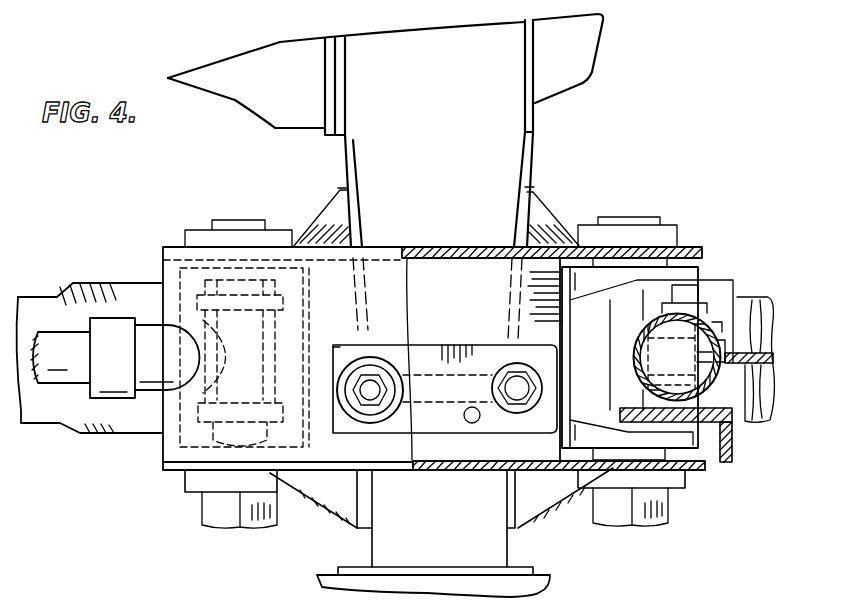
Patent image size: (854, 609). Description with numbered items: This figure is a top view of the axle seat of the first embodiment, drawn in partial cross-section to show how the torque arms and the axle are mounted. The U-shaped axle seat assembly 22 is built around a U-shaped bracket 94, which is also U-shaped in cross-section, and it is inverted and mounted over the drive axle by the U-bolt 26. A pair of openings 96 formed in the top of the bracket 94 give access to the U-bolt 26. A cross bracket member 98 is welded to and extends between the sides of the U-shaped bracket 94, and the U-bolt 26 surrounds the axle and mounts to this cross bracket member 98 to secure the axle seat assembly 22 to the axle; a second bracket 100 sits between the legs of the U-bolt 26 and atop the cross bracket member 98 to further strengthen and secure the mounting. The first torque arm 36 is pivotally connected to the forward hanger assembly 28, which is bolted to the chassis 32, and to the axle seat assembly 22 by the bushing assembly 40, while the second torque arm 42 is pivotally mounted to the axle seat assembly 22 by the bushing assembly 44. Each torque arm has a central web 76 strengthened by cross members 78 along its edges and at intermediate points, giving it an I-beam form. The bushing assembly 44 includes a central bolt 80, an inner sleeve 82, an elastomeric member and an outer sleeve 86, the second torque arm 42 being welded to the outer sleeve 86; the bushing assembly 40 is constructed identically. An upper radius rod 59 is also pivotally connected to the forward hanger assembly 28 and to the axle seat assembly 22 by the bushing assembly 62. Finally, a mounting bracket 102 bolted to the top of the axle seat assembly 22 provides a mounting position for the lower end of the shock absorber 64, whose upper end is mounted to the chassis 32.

The axle seat assembly 22 is at (697, 242).
The U-bolt 26 is at (383, 365).
The forward hanger assembly 28 is at (383, 538).
The chassis 32 is at (610, 608).
The first torque arm 36 is at (99, 275).
The bushing assembly 40 is at (206, 530).
The second torque arm 42 is at (744, 440).
The bushing assembly 44 is at (637, 529).
The upper radius rod 59 is at (60, 387).
The bushing assembly 62 is at (249, 285).
The shock absorber 64 is at (638, 368).
The central web 76 is at (769, 416).
The cross members 78 is at (742, 310).
The central bolt 80 is at (610, 508).
The inner sleeve 82 is at (618, 262).
The outer sleeve 86 is at (690, 270).
The U-shaped bracket 94 is at (165, 475).
The openings 96 is at (343, 347).
The cross bracket member 98 is at (462, 272).
The second bracket 100 is at (442, 428).
The mounting bracket 102 is at (727, 465).